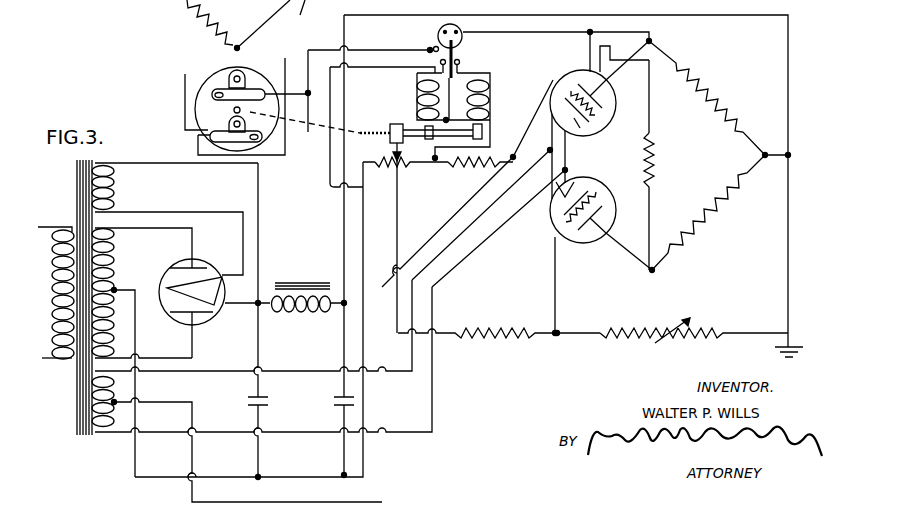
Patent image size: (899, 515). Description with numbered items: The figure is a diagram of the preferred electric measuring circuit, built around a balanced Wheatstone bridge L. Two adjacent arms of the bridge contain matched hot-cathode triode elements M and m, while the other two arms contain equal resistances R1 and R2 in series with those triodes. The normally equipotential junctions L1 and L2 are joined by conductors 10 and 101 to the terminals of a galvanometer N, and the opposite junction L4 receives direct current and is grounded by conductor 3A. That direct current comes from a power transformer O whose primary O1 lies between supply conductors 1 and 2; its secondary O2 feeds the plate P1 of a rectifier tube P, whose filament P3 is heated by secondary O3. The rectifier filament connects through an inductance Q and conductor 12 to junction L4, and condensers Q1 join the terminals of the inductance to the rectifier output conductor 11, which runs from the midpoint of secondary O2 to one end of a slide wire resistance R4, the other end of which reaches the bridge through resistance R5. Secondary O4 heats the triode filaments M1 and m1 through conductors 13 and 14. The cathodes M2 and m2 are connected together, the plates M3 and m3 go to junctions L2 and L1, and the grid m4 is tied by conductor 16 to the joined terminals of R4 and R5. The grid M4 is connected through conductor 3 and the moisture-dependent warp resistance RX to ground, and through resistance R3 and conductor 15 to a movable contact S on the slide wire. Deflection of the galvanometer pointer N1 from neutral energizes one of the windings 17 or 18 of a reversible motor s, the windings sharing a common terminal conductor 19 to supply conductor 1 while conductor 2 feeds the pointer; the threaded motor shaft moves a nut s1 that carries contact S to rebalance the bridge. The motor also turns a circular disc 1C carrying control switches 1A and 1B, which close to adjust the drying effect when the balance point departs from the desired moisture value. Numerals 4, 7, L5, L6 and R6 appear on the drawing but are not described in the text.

The supply conductor 1 is at (378, 67).
The control switch 1A is at (246, 90).
The control switch 1B is at (210, 142).
The circular disc 1C is at (208, 90).
The supply conductor 2 is at (50, 380).
The conductor 3 is at (575, 336).
The conductor 3A is at (788, 210).
The conductor 4 is at (285, 58).
The conductor 7 is at (184, 93).
The conductor 10 is at (605, 8).
The conductor 101 is at (650, 105).
The conductor 11 is at (363, 242).
The conductor 12 is at (330, 187).
The conductor 13 is at (200, 372).
The conductor 14 is at (200, 432).
The conductor 15 is at (398, 223).
The conductor 16 is at (540, 86).
The energizing winding 17 is at (490, 94).
The energizing winding 18 is at (417, 98).
The common terminal conductor 19 is at (474, 133).
The Wheatstone bridge L is at (693, 130).
The bridge junction L1 is at (652, 42).
The bridge junction L2 is at (655, 273).
The bridge junction L4 is at (760, 162).
The junction L5 is at (512, 155).
The conductor L6 is at (270, 25).
The triode tube element M is at (616, 206).
The filament M1 is at (573, 178).
The cathode M2 is at (556, 214).
The plate M3 is at (590, 240).
The grid M4 is at (610, 189).
The triode tube element m is at (568, 73).
The filament m1 is at (579, 130).
The cathode m2 is at (560, 112).
The plate m3 is at (600, 75).
The grid m4 is at (615, 105).
The galvanometer N is at (438, 34).
The galvanometer pointer N1 is at (446, 50).
The power transformer O is at (77, 192).
The primary winding O1 is at (52, 302).
The secondary winding O2 is at (113, 250).
The secondary winding O3 is at (113, 196).
The secondary winding O4 is at (114, 425).
The rectifier tube P is at (226, 283).
The plate P1 is at (200, 263).
The rectifier tube filament P3 is at (165, 287).
The inductance Q is at (308, 312).
The condenser Q1 is at (336, 402).
The resistance R1 is at (698, 236).
The resistance R2 is at (705, 95).
The resistance R3 is at (470, 331).
The slide wire resistance R4 is at (412, 166).
The resistance R5 is at (470, 166).
The resistor R6 is at (185, 3).
The warp resistance RX is at (694, 345).
The movable contact S is at (397, 178).
The reversible electric motor s is at (450, 91).
The nut s1 is at (393, 124).